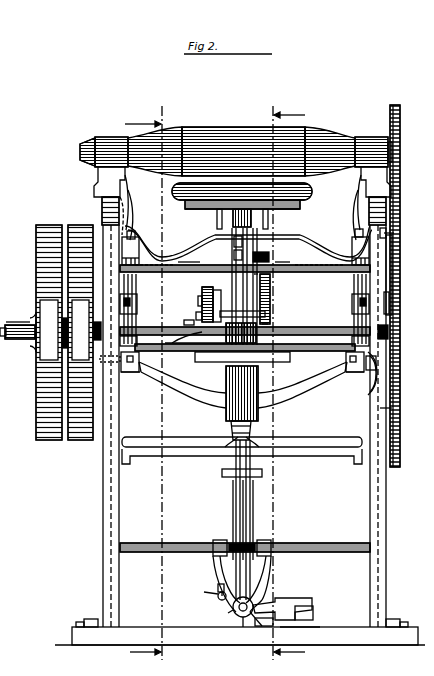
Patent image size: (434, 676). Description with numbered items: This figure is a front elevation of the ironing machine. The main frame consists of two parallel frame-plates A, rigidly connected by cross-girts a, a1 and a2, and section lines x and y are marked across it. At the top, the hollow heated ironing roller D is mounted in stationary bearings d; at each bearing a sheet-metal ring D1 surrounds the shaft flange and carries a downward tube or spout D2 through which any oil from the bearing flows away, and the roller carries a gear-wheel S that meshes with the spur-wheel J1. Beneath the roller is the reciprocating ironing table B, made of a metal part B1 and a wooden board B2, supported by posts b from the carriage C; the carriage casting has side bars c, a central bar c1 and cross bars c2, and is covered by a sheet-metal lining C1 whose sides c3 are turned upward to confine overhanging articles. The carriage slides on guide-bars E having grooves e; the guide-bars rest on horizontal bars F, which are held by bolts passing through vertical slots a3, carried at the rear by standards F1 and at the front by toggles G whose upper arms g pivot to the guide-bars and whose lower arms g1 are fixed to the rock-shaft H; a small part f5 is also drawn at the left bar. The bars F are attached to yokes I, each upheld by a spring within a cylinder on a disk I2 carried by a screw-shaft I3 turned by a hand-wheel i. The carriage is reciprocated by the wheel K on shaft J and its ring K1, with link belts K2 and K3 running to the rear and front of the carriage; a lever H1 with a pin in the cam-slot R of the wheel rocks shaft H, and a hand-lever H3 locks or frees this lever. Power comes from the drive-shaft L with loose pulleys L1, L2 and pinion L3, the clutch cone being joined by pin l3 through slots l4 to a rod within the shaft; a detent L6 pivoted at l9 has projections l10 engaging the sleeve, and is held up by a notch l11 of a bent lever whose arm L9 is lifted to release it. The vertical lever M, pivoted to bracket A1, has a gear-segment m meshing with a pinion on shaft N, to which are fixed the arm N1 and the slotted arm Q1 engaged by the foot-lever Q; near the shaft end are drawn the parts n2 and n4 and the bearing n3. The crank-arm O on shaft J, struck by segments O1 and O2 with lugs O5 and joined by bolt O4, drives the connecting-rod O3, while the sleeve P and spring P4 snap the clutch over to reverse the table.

The ironing roller D is at (240, 130).
The sheet-metal ring D1 is at (118, 141).
The roller bearing d is at (108, 140).
The gear-wheel S is at (399, 134).
The tube or spout D2 is at (122, 178).
The upturned lining side c3 is at (244, 211).
The frame-plate A is at (103, 211).
The wooden board B2 is at (175, 190).
The ironing table B is at (296, 200).
The metal table part B1 is at (236, 210).
The post b is at (218, 225).
The carriage C is at (205, 238).
The sheet-metal lining C1 is at (240, 253).
The side bar c is at (241, 215).
The central longitudinal bar c1 is at (262, 228).
The cross bar c2 is at (189, 262).
The guide-bar E is at (128, 254).
The guide-groove e is at (243, 241).
The wheel K is at (254, 250).
The ring K1 is at (234, 255).
The link-belt K2 is at (272, 280).
The link belt K3 is at (234, 241).
The cam-slot R is at (258, 296).
The lever H1 is at (266, 296).
The detent L6 is at (300, 326).
The detent projection l10 is at (268, 320).
The detent pivot l9 is at (245, 342).
The upper toggle arm g is at (128, 288).
The toggle G is at (244, 304).
The lower toggle arm g1 is at (128, 322).
The crank-arm O is at (214, 302).
The segment O1 is at (186, 322).
The segment O2 is at (216, 296).
The connecting-rod O3 is at (232, 510).
The bolt O4 is at (202, 301).
The lug O5 is at (195, 311).
The vertical slot a3 is at (206, 287).
The drive-shaft L is at (182, 326).
The notch l11 is at (393, 306).
The loose pulley L2 is at (84, 332).
The gear-pinion L3 is at (393, 333).
The actuating-arm L9 is at (30, 320).
The spur-wheel J1 is at (395, 283).
The pin f5 is at (120, 358).
The standard F1 is at (130, 372).
The horizontal bar F is at (349, 372).
The hand-lever H3 is at (172, 382).
The rock-shaft H is at (266, 358).
The slot l4 is at (372, 366).
The pin l3 is at (377, 373).
The yoke I is at (270, 400).
The bracket A1 is at (230, 427).
The disk I2 is at (252, 424).
The screw-shaft I3 is at (252, 433).
The cross-girt a is at (338, 444).
The cross-girt a1 is at (242, 458).
The hand-wheel i is at (262, 473).
The lever M is at (252, 517).
The cross-girt a2 is at (300, 550).
The gear-segment m is at (220, 572).
The rock-shaft N is at (240, 612).
The rigid arm N1 is at (218, 600).
The pin n2 is at (225, 613).
The bearing n3 is at (216, 589).
The pin n4 is at (205, 590).
The slotted arm Q1 is at (282, 607).
The foot-lever Q is at (304, 615).
The sleeve P is at (250, 621).
The coiled spring P4 is at (262, 630).
The section line x is at (286, 383).
The section line y is at (144, 383).